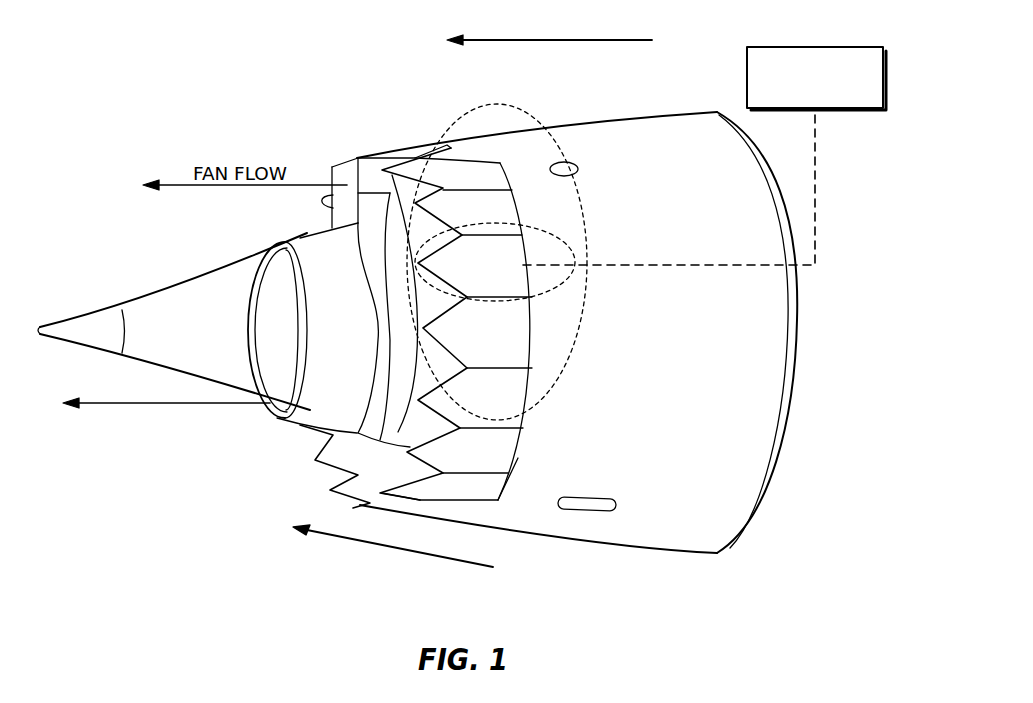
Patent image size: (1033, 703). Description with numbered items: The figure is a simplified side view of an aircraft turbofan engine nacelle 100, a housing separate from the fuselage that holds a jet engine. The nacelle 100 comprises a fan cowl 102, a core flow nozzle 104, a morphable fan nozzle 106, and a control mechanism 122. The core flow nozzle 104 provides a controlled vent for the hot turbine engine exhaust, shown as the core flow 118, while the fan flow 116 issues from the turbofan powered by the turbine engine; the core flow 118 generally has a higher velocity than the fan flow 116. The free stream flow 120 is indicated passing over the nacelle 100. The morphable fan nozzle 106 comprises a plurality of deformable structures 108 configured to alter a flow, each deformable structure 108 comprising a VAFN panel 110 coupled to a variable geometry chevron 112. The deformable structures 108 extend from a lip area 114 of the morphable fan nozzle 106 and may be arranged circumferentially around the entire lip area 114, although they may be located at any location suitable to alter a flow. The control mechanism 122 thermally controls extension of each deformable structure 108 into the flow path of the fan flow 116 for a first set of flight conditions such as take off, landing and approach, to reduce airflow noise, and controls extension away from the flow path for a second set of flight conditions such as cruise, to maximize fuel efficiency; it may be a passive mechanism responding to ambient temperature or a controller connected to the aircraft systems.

The aircraft turbofan engine nacelle 100 is at (250, 45).
The fan cowl 102 is at (725, 380).
The core flow nozzle 104 is at (295, 283).
The morphable fan nozzle 106 is at (372, 165).
The deformable structure 108 is at (530, 228).
The VAFN panel 110 is at (473, 278).
The variable geometry chevron 112 is at (452, 263).
The lip area 114 is at (518, 458).
The fan flow 116 is at (308, 182).
The core flow 118 is at (225, 405).
The free stream flow 120 is at (477, 567).
The control mechanism 122 is at (837, 45).